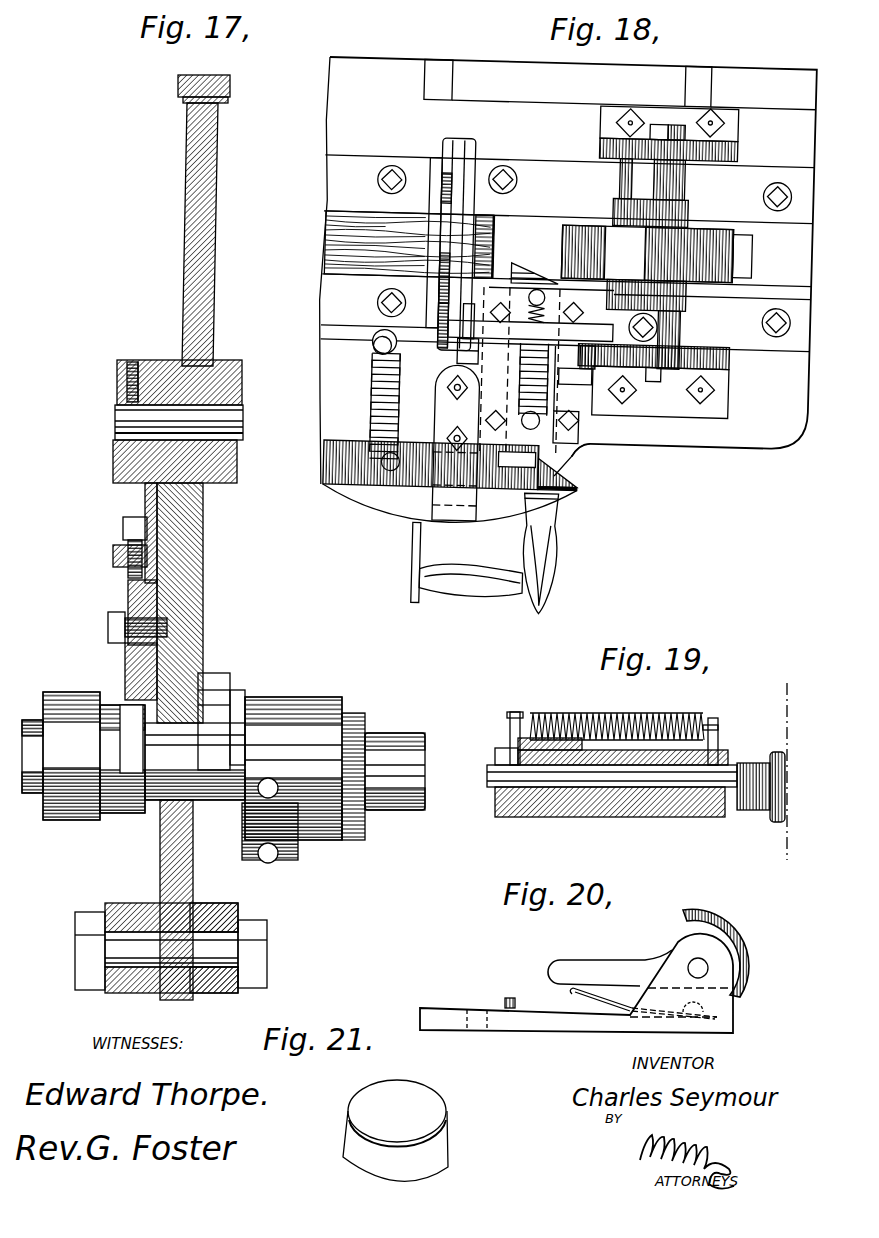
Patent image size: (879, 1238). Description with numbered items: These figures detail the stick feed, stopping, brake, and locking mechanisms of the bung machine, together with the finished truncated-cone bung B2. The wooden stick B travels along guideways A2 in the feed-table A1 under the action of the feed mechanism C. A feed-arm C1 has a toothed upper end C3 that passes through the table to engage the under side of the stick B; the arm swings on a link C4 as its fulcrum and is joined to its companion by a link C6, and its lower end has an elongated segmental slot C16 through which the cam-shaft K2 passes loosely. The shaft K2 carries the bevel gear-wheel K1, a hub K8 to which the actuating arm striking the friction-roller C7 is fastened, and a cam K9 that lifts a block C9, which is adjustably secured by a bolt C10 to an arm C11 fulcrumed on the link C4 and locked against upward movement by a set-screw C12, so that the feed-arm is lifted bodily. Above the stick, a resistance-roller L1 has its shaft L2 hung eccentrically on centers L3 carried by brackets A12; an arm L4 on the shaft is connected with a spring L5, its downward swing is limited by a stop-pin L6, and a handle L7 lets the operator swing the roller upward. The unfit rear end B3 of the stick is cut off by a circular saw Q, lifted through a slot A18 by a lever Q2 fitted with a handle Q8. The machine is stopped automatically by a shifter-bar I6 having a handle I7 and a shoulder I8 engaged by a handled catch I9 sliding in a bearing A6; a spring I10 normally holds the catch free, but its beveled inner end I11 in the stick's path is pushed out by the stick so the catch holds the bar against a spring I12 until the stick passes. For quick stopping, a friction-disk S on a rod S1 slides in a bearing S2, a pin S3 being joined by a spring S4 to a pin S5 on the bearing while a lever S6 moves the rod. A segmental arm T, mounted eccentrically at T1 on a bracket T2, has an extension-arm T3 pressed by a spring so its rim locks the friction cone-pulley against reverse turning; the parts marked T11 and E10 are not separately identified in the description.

In FIG. 17, the toothed upper end of feed-arm C3 is at (178, 86).
In FIG. 17, the feed-arm C1 is at (187, 230).
In FIG. 17, the link C4 is at (113, 460).
In FIG. 17, the arm C11 is at (152, 603).
In FIG. 17, the set-screw C12 is at (123, 524).
In FIG. 17, the bolt C10 is at (112, 627).
In FIG. 17, the block C9 is at (125, 665).
In FIG. 17, the friction-roller C7 is at (210, 676).
In FIG. 17, the bevel gear-wheel K1 is at (212, 745).
In FIG. 17, the cam K9 is at (110, 705).
In FIG. 17, the hub K8 is at (315, 685).
In FIG. 17, the cam-shaft K2 is at (405, 765).
In FIG. 17, the elongated segmental slot C16 is at (183, 805).
In FIG. 17, the bolt block E10 is at (130, 890).
In FIG. 17, the link C6 is at (218, 915).
In FIG. 18, the feed-table A1 is at (332, 366).
In FIG. 18, the guideways A2 is at (330, 182).
In FIG. 18, the wooden stick B is at (330, 242).
In FIG. 18, the rear end of stick B3 is at (492, 235).
In FIG. 18, the slot A18 is at (445, 140).
In FIG. 18, the circular saw Q is at (445, 168).
In FIG. 18, the beveled inner end of catch I11 is at (535, 250).
In FIG. 18, the arm L4 is at (596, 333).
In FIG. 18, the spring L5 is at (465, 353).
In FIG. 18, the spring I12 is at (380, 400).
In FIG. 18, the spring I10 is at (489, 405).
In FIG. 18, the shifter-bar I6 is at (337, 470).
In FIG. 18, the shoulder I8 is at (575, 470).
In FIG. 18, the bearing A6 is at (585, 448).
In FIG. 18, the handled catch I9 is at (580, 432).
In FIG. 18, the stop-pin L6 is at (582, 378).
In FIG. 18, the brackets A12 is at (740, 124).
In FIG. 18, the centers L3 is at (665, 120).
In FIG. 18, the shaft L2 is at (623, 177).
In FIG. 18, the resistance-roller L1 is at (573, 222).
In FIG. 18, the feed mechanism C is at (755, 257).
In FIG. 18, the handle L7 is at (665, 320).
In FIG. 18, the lever Q2 is at (425, 548).
In FIG. 18, the handle Q8 is at (495, 568).
In FIG. 18, the handle I7 is at (560, 545).
In FIG. 19, the rod S1 is at (668, 790).
In FIG. 19, the bearing S2 is at (593, 805).
In FIG. 19, the lever S6 is at (552, 738).
In FIG. 19, the spring S4 is at (598, 716).
In FIG. 19, the pin S3 is at (507, 716).
In FIG. 19, the pin S5 is at (714, 718).
In FIG. 19, the friction-disk S is at (785, 782).
In FIG. 20, the bracket T2 is at (555, 1026).
In FIG. 20, the eccentric mounting T1 is at (692, 965).
In FIG. 20, the segmental arm T is at (737, 925).
In FIG. 20, the extension-arm T3 is at (595, 970).
In FIG. 20, the rod T11 is at (600, 997).
In FIG. 21, the bung B2 is at (425, 1095).